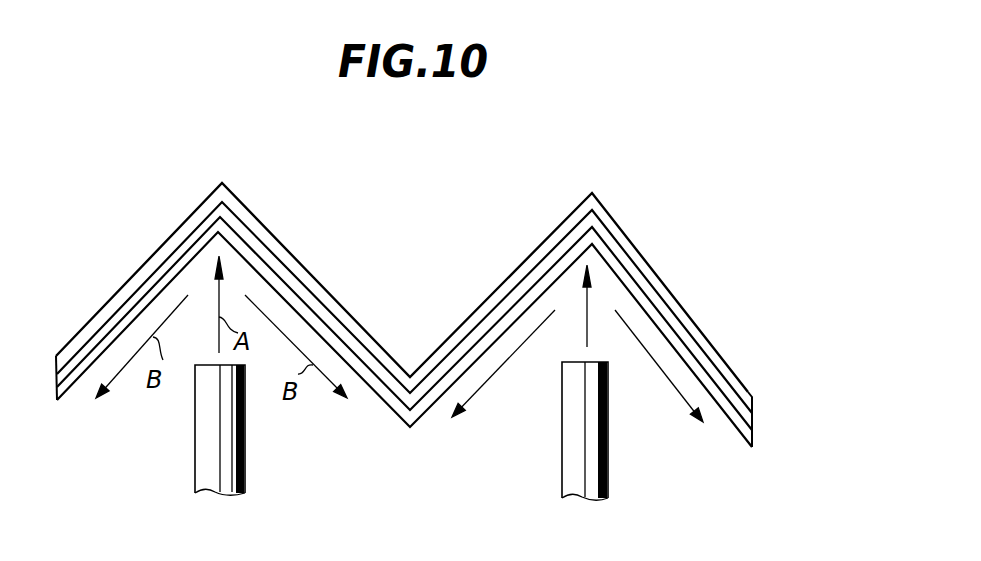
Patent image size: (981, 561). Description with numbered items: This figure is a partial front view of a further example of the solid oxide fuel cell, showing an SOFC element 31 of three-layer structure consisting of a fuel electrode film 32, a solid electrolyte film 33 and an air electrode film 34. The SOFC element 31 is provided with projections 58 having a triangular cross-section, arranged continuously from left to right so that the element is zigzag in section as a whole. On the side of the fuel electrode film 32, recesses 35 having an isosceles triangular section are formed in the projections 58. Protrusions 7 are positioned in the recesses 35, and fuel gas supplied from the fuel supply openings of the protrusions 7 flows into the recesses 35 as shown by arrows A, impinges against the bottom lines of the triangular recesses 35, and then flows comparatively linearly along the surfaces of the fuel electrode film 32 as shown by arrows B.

The protrusion 7 is at (225, 467).
The SOFC element 31 is at (678, 289).
The fuel electrode film 32 is at (752, 447).
The solid electrolyte film 33 is at (752, 420).
The air electrode film 34 is at (747, 391).
The recess 35 is at (240, 268).
The projection 58 is at (225, 209).